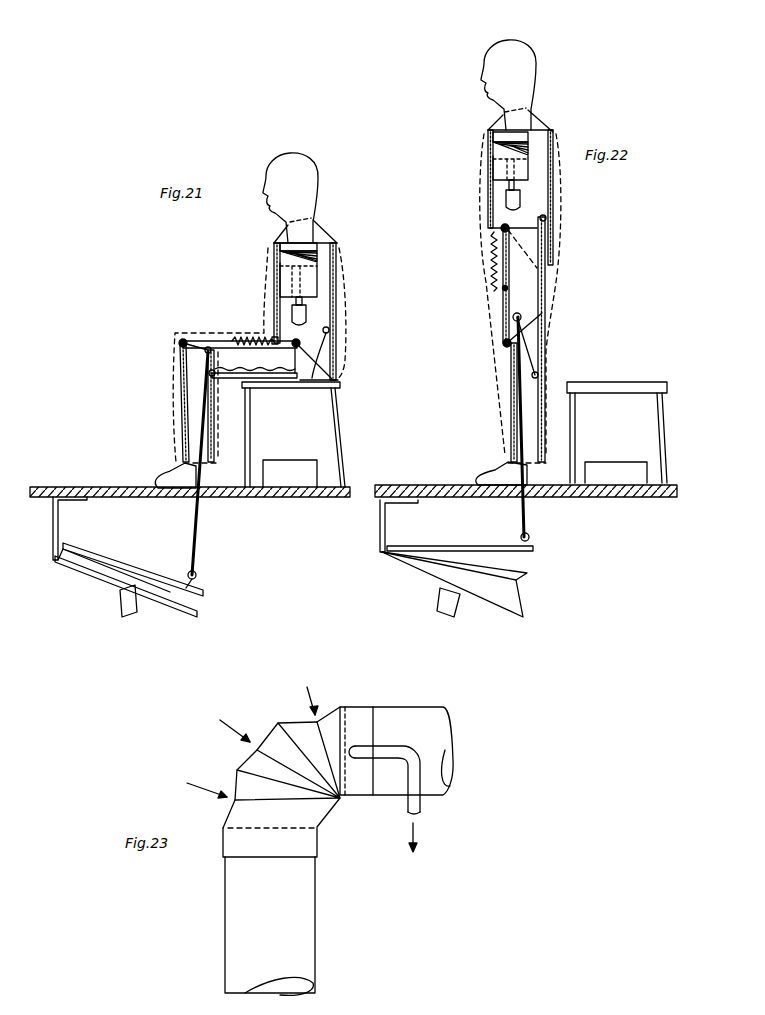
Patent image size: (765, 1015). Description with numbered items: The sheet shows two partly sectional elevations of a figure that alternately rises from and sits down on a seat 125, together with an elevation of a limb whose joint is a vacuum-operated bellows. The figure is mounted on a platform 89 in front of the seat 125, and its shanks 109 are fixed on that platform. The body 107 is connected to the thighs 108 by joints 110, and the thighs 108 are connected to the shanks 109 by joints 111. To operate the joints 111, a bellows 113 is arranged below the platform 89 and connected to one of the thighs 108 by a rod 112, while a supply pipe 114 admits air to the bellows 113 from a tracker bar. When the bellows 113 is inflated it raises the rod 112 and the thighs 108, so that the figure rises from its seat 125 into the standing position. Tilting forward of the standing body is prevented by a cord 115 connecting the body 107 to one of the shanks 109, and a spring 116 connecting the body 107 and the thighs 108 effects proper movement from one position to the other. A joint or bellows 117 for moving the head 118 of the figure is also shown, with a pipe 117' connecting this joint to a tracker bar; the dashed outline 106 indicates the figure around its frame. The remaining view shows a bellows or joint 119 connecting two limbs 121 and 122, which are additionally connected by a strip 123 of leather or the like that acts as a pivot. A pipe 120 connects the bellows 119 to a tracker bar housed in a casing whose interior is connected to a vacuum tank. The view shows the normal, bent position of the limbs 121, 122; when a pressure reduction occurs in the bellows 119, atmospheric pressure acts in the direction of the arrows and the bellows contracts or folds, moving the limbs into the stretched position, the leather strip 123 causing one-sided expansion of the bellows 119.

In FIG. 21, the platform 89 is at (34, 498).
In FIG. 21, the dummy body outline 106 is at (345, 303).
In FIG. 22, the dummy body outline 106 is at (565, 255).
In FIG. 21, the body 107 is at (318, 318).
In FIG. 22, the body 107 is at (532, 200).
In FIG. 21, the thighs 108 is at (220, 348).
In FIG. 22, the thighs 108 is at (546, 287).
In FIG. 21, the shanks 109 is at (193, 407).
In FIG. 22, the shanks 109 is at (525, 405).
In FIG. 21, the joints 110 is at (300, 342).
In FIG. 22, the joints 110 is at (500, 225).
In FIG. 21, the joints 111 is at (181, 341).
In FIG. 22, the joints 111 is at (505, 345).
In FIG. 21, the rod 112 is at (196, 533).
In FIG. 22, the rod 112 is at (527, 518).
In FIG. 21, the bellows 113 is at (158, 593).
In FIG. 22, the bellows 113 is at (515, 597).
In FIG. 21, the supply pipe 114 is at (123, 611).
In FIG. 22, the supply pipe 114 is at (447, 600).
In FIG. 21, the cord 115 is at (339, 385).
In FIG. 22, the cord 115 is at (540, 350).
In FIG. 21, the spring 116 is at (253, 337).
In FIG. 22, the spring 116 is at (492, 283).
In FIG. 21, the joint or bellows 117 is at (326, 256).
In FIG. 22, the joint or bellows 117 is at (536, 140).
In FIG. 21, the pipe 117' is at (339, 291).
In FIG. 22, the pipe 117' is at (480, 190).
In FIG. 21, the head 118 is at (316, 182).
In FIG. 22, the head 118 is at (533, 67).
In FIG. 21, the seat 125 is at (338, 447).
In FIG. 22, the seat 125 is at (663, 450).
In FIG. 23, the bellows or joint 119 is at (253, 762).
In FIG. 23, the pipe 120 is at (421, 802).
In FIG. 23, the limb 121 is at (402, 714).
In FIG. 23, the limb 122 is at (230, 888).
In FIG. 23, the strip 123 is at (327, 815).